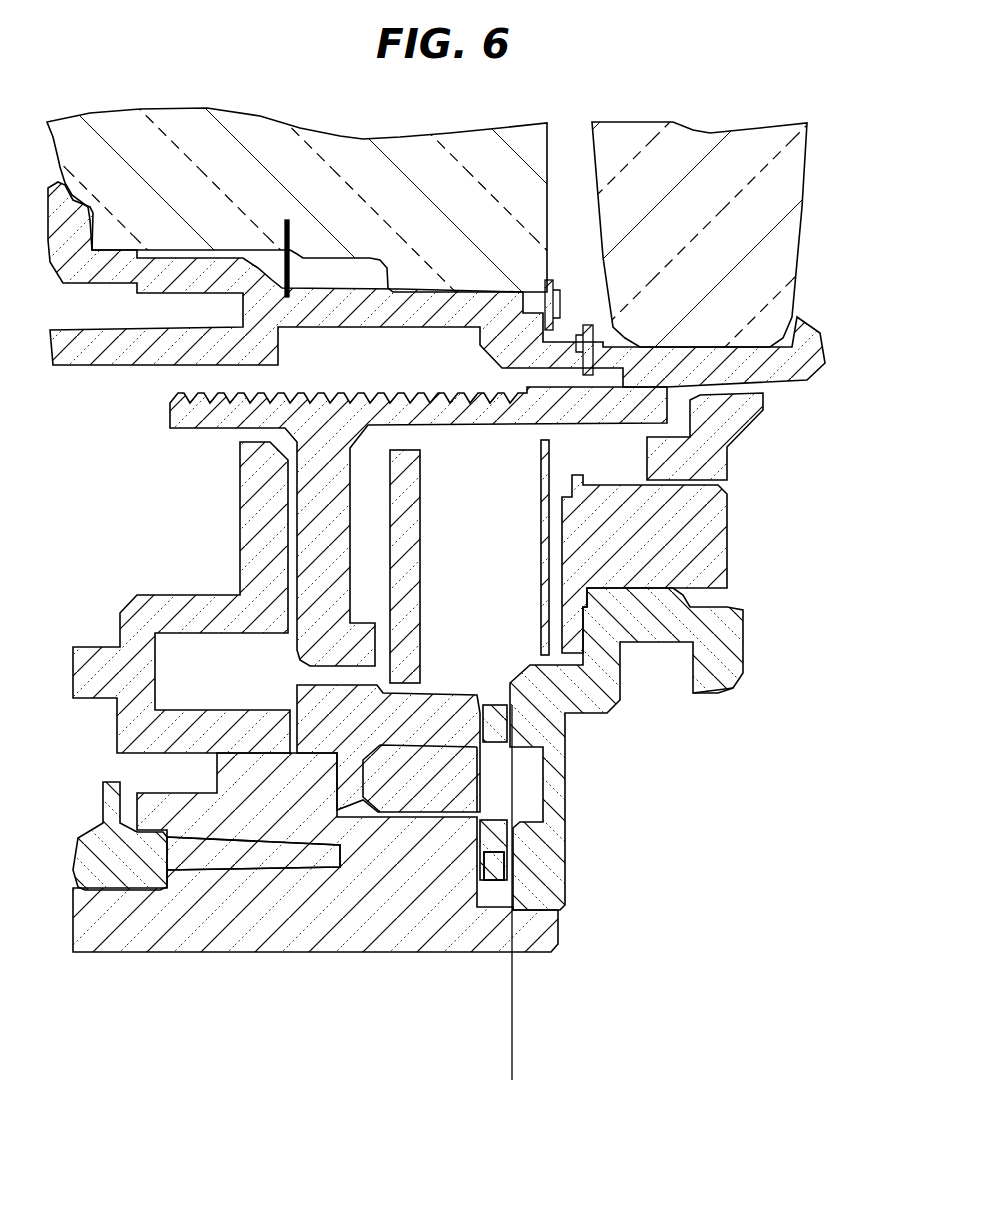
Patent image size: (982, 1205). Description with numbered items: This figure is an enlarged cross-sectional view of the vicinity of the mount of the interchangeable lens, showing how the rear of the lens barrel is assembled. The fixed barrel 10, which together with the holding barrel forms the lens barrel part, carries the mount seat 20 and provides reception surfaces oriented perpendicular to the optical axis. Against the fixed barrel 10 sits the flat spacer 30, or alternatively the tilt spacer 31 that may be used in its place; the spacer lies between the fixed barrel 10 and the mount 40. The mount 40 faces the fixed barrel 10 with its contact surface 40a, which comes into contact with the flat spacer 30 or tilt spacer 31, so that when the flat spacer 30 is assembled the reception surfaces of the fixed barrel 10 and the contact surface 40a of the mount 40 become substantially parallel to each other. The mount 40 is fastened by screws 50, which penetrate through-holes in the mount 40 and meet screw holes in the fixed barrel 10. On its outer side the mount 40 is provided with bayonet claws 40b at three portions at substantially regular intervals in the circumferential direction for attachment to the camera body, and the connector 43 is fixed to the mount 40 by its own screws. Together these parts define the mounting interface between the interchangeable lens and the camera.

The fixed barrel 10 is at (260, 938).
The mount seat 20 is at (480, 855).
The flat spacer 30 is at (497, 877).
The tilt spacer 31 is at (494, 866).
The mount 40 is at (743, 646).
The contact surface 40a is at (512, 1048).
The bayonet claws 40b is at (693, 697).
The connector 43 is at (722, 535).
The screws 50 is at (548, 782).